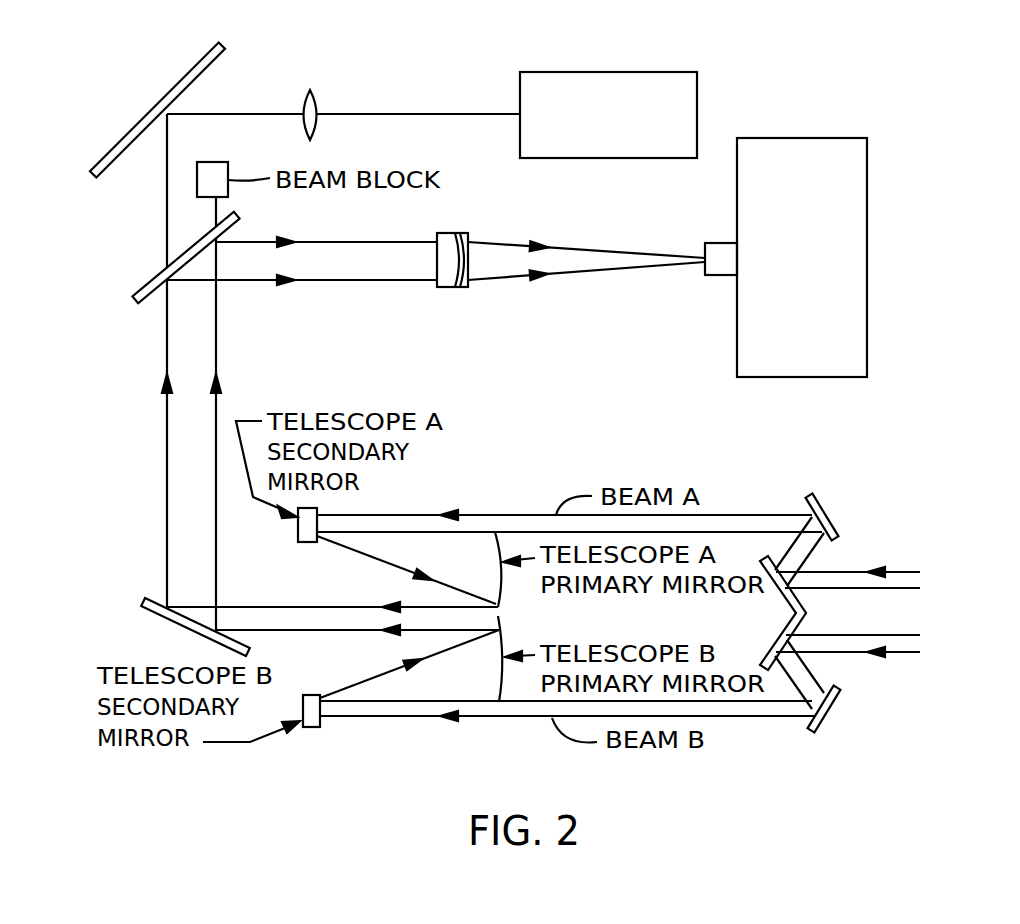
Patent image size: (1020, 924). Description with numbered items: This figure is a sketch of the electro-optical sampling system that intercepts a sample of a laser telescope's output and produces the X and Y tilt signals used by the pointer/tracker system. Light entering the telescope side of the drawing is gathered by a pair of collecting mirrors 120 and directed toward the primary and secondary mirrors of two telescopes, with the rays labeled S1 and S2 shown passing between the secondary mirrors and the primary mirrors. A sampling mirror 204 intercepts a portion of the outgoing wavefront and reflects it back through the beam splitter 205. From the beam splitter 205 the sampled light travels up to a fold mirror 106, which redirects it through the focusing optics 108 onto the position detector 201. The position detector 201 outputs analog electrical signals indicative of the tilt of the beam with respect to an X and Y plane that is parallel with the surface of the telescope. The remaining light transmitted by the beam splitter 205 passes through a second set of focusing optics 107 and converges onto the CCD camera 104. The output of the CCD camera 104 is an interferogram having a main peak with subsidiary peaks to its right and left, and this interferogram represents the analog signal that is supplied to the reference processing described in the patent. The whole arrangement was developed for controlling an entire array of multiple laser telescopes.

The fold mirror 106 is at (147, 118).
The focusing optics 108 is at (298, 102).
The position detector 201 is at (608, 115).
The CCD camera 104 is at (762, 138).
The beam splitter 205 is at (145, 288).
The focusing optics 107 is at (450, 287).
The collecting mirror 120 is at (873, 820).
The sampling mirror 204 is at (182, 634).
The ray S1 telescope A S1 is at (362, 562).
The ray S2 telescope B S2 is at (333, 685).